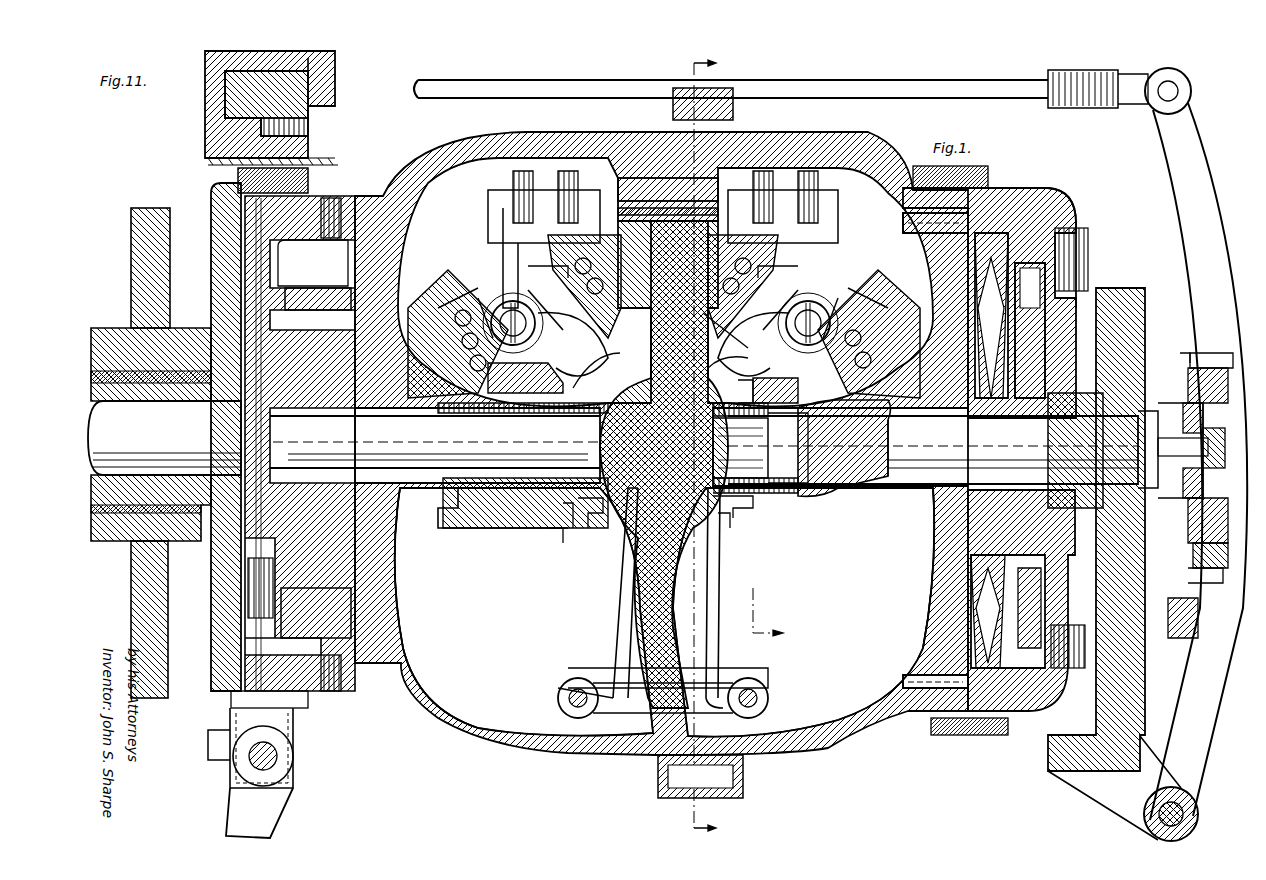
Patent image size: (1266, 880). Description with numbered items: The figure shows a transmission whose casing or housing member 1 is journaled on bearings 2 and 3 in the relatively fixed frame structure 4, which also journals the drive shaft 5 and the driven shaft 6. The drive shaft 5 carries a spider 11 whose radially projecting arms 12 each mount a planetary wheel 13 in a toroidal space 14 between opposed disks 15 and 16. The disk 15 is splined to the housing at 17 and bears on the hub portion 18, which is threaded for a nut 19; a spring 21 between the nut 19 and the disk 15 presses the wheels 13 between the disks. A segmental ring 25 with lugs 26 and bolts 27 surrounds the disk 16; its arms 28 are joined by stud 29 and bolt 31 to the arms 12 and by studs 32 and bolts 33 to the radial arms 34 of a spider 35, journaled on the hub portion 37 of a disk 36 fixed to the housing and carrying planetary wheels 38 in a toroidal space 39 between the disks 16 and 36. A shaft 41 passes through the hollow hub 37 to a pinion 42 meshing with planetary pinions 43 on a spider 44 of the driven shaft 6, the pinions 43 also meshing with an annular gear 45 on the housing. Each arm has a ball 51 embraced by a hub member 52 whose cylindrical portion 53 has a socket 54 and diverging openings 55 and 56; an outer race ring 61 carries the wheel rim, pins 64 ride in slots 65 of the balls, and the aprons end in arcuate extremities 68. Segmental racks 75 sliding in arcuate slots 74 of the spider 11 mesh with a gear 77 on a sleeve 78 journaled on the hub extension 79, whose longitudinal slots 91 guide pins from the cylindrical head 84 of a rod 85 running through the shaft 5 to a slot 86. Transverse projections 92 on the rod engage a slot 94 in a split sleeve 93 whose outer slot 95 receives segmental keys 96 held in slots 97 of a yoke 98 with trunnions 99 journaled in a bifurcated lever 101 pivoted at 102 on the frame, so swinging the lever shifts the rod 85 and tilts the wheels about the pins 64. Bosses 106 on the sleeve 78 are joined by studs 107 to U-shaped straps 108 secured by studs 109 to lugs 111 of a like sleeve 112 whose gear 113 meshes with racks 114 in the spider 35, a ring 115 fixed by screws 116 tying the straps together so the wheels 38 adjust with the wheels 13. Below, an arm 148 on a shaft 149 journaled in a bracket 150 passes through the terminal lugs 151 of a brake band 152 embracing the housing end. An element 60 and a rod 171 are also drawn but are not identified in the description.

In FIG. 1, the casing or housing member 1 is at (1040, 190).
In FIG. 1, the bearing 2 is at (1045, 395).
In FIG. 1, the bearing 3 is at (168, 322).
In FIG. 1, the relatively fixed frame structure 4 is at (1120, 280).
In FIG. 1, the drive shaft 5 is at (933, 450).
In FIG. 1, the driven shaft 6 is at (164, 438).
In FIG. 1, the spider 11 is at (830, 490).
In FIG. 1, the radially projecting arms 12 is at (775, 245).
In FIG. 1, the planetary wheel 13 is at (705, 292).
In FIG. 1, the torroidal space 14 is at (803, 612).
In FIG. 1, the disk 15 is at (925, 568).
In FIG. 1, the disk 16 is at (662, 560).
In FIG. 1, the spline 17 is at (898, 170).
In FIG. 1, the inwardly projecting hub portion 18 is at (920, 340).
In FIG. 1, the nut 19 is at (1022, 255).
In FIG. 1, the spring 21 is at (983, 230).
In FIG. 1, the ring 25 is at (620, 170).
In FIG. 1, the lugs 26 is at (548, 676).
In FIG. 1, the bolts 27 is at (561, 698).
In FIG. 1, the arm 28 is at (478, 190).
In FIG. 1, the stud 29 is at (800, 163).
In FIG. 1, the bolt 31 is at (755, 163).
In FIG. 1, the studs 32 is at (515, 163).
In FIG. 1, the bolts 33 is at (560, 163).
In FIG. 1, the radial arms 34 is at (493, 230).
In FIG. 1, the spider 35 is at (487, 510).
In FIG. 1, the disk 36 is at (428, 556).
In FIG. 1, the inwardly projecting hub portion 37 is at (428, 500).
In FIG. 1, the planetary wheel 38 is at (604, 300).
In FIG. 1, the torroidal space 39 is at (524, 612).
In FIG. 1, the sleeve 41 is at (580, 405).
In FIG. 1, the pinion 42 is at (355, 410).
In FIG. 1, the planetary pinions 43 is at (290, 260).
In FIG. 1, the spider 44 is at (240, 575).
In FIG. 1, the annular gear 45 is at (328, 190).
In FIG. 1, the ball-shaped portion 51 is at (487, 290).
In FIG. 1, the member 52 is at (580, 314).
In FIG. 1, the hollow cylindrical portion 53 is at (500, 254).
In FIG. 1, the socket 54 is at (720, 316).
In FIG. 1, the opening 55 is at (440, 290).
In FIG. 1, the opening 56 is at (590, 330).
In FIG. 1, the roller 60 is at (657, 263).
In FIG. 1, the second ring 61 is at (447, 312).
In FIG. 1, the pins 64 is at (660, 309).
In FIG. 1, the slots 65 is at (460, 276).
In FIG. 1, the arcuate extremities 68 is at (598, 357).
In FIG. 11, the arcuate slot 74 is at (302, 62).
In FIG. 1, the arcuate slot 74 is at (770, 370).
In FIG. 11, the segmental rack 75 is at (302, 80).
In FIG. 1, the segmental rack 75 is at (780, 392).
In FIG. 11, the gear 77 is at (302, 118).
In FIG. 1, the gear 77 is at (775, 490).
In FIG. 11, the sleeve 78 is at (310, 137).
In FIG. 1, the sleeve 78 is at (725, 371).
In FIG. 1, the inner hollow cylindrical extension 79 is at (765, 488).
In FIG. 1, the cylindrical head portion 84 is at (740, 448).
In FIG. 1, the rod 85 is at (895, 430).
In FIG. 1, the slot 86 is at (1155, 395).
In FIG. 1, the longitudinal slots 91 is at (725, 395).
In FIG. 1, the transverse projections 92 is at (1188, 420).
In FIG. 1, the split sleeve 93 is at (1222, 565).
In FIG. 1, the circumferential slot 94 is at (1195, 455).
In FIG. 1, the circumferential slot 95 is at (1180, 375).
In FIG. 1, the segmental keys 96 is at (1225, 352).
In FIG. 1, the slots 97 is at (1195, 345).
In FIG. 1, the ring or yoke 98 is at (1182, 345).
In FIG. 1, the trunnions 99 is at (1183, 450).
In FIG. 1, the bifurcated lever 101 is at (1180, 700).
In FIG. 1, the pivot 102 is at (1185, 800).
In FIG. 1, the bosses 106 is at (740, 500).
In FIG. 1, the stud 107 is at (718, 530).
In FIG. 1, the U-shaped strap 108 is at (712, 563).
In FIG. 1, the studs 109 is at (615, 530).
In FIG. 1, the lugs 111 is at (582, 520).
In FIG. 1, the sleeve 112 is at (560, 520).
In FIG. 1, the gear 113 is at (540, 522).
In FIG. 1, the segmental racks 114 is at (550, 372).
In FIG. 1, the ring 115 is at (580, 660).
In FIG. 1, the screws 116 is at (715, 650).
In FIG. 1, the arm 148 is at (265, 800).
In FIG. 1, the shaft 149 is at (270, 758).
In FIG. 1, the bracket 150 is at (222, 732).
In FIG. 1, the terminal lugs 151 is at (285, 722).
In FIG. 1, the brake band 152 is at (230, 172).
In FIG. 1, the control rod 171 is at (915, 78).